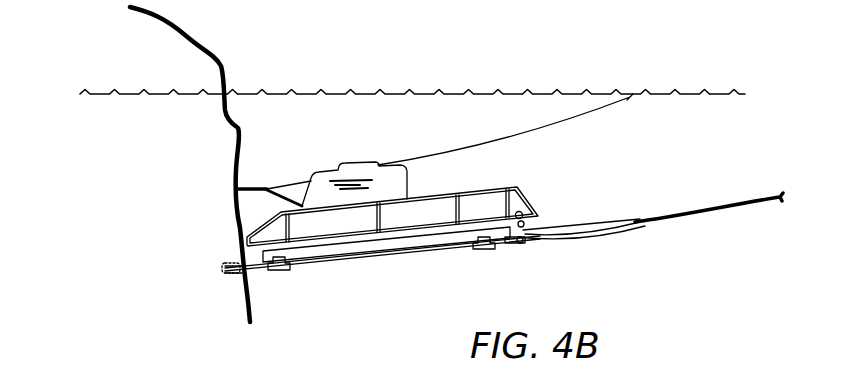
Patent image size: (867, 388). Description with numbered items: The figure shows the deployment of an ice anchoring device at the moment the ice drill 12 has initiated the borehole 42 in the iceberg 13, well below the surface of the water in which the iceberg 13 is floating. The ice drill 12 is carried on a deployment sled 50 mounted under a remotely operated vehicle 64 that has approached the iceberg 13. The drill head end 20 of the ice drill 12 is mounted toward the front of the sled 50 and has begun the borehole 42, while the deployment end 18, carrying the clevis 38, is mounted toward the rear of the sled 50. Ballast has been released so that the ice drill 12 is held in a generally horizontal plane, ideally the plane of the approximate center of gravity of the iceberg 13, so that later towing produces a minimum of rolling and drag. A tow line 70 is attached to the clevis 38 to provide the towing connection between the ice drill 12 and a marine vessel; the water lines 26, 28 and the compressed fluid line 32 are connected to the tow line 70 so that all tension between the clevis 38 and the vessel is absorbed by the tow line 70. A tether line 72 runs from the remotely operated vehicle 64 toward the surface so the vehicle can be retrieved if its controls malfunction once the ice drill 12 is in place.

The ice drill 12 is at (358, 259).
The iceberg 13 is at (197, 155).
The deployment end 18 is at (469, 247).
The drill head end 20 is at (231, 273).
The water line 26 is at (583, 237).
The water line 28 is at (611, 237).
The compressed fluid line 32 is at (643, 233).
The clevis 38 is at (511, 247).
The borehole 42 is at (238, 265).
The deployment sled 50 is at (477, 191).
The remotely operated vehicle 64 is at (327, 183).
The tow line 70 is at (727, 204).
The tether line 72 is at (457, 145).